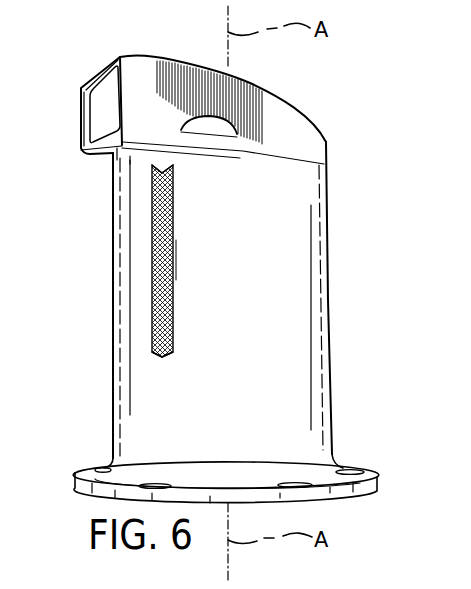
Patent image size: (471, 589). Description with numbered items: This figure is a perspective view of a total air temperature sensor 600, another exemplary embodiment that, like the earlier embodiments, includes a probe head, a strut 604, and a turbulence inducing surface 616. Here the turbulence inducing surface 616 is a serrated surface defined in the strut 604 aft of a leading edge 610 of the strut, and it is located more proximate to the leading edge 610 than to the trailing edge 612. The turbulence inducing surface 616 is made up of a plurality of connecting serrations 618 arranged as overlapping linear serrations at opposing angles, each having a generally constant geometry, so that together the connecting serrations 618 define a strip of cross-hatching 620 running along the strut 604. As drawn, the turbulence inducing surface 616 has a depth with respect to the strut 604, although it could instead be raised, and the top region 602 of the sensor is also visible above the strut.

The total air temperature sensor 600 is at (347, 118).
The top cap 602 is at (197, 73).
The strut 604 is at (293, 347).
The leading edge 610 is at (113, 320).
The trailing edge 612 is at (330, 303).
The turbulence inducing surface 616 is at (190, 261).
The connecting serrations 618 is at (157, 163).
The strip of cross-hatching 620 is at (152, 245).